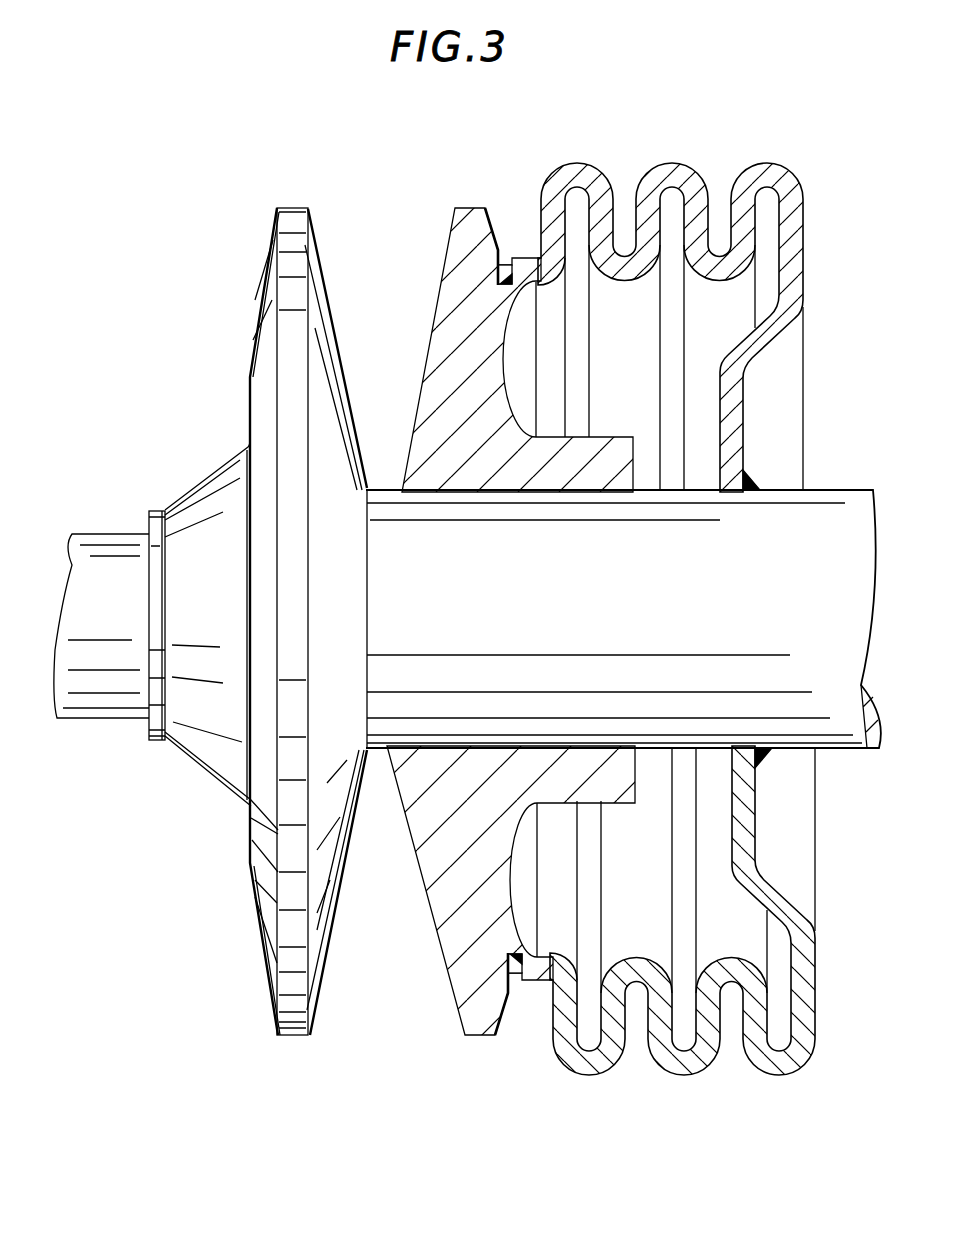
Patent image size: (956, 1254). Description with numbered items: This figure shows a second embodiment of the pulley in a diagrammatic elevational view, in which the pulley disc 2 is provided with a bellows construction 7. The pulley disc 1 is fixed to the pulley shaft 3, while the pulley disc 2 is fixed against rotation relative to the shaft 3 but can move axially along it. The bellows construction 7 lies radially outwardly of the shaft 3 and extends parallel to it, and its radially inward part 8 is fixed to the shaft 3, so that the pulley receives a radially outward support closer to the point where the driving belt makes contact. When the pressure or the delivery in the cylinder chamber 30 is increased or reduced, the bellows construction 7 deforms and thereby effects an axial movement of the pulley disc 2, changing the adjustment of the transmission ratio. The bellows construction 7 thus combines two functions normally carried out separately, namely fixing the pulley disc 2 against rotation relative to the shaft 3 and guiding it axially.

The pulley disc 1 is at (288, 208).
The pulley disc 2 is at (466, 208).
The pulley shaft 3 is at (868, 538).
The bellows construction 7 is at (798, 174).
The radially inward part 8 is at (741, 383).
The cylinder chamber 30 is at (634, 386).